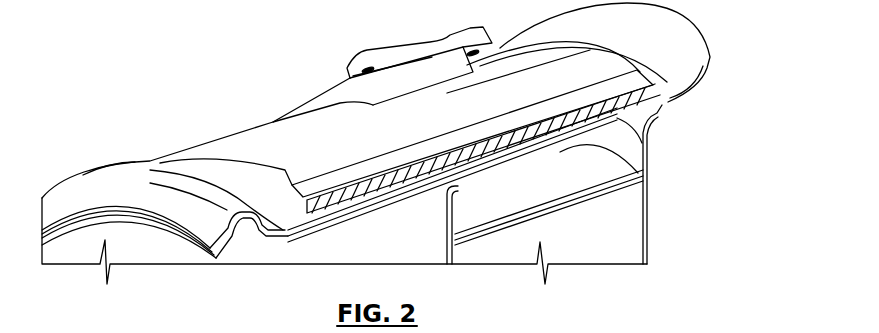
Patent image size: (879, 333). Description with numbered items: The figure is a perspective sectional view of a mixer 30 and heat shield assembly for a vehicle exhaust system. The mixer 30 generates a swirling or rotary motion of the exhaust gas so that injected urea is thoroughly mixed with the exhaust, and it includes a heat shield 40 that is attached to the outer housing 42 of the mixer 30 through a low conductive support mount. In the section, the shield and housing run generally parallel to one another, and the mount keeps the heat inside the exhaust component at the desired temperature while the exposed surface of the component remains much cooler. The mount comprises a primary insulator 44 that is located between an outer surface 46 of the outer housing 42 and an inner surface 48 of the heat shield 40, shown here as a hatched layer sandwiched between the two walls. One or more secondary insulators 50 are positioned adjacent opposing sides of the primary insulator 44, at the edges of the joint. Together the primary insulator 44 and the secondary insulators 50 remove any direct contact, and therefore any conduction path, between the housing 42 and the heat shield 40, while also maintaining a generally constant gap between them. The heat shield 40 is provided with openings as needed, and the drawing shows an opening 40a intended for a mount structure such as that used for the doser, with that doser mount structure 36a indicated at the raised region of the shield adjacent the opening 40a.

The mixer 30 is at (745, 70).
The clip 36a is at (427, 57).
The heat shield 40 is at (270, 153).
The opening 40a is at (490, 54).
The outer housing 42 is at (667, 82).
The primary insulator 44 is at (647, 152).
The outer surface 46 is at (530, 140).
The inner surface 48 is at (552, 116).
The secondary insulator 50 is at (666, 100).